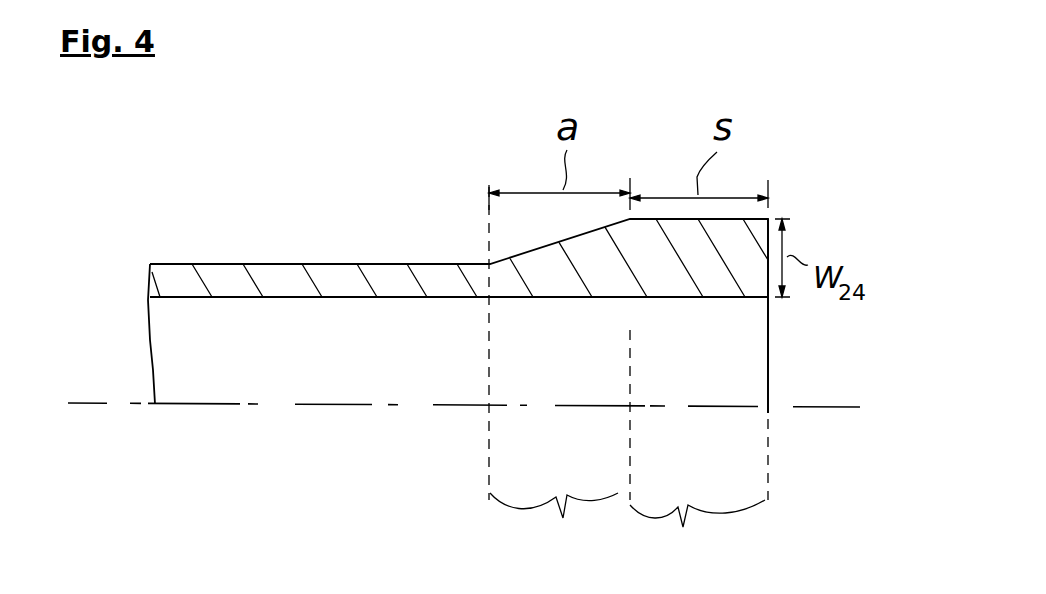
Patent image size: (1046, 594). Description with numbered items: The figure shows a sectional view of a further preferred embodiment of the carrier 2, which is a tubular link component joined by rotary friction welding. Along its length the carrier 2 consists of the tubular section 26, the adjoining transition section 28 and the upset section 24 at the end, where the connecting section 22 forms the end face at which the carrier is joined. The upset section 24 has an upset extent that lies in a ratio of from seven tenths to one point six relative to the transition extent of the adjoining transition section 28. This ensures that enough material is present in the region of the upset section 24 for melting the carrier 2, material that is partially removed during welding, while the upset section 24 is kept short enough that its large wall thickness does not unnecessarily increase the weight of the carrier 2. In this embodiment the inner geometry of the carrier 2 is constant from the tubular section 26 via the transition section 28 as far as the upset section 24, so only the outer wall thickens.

The carrier 2 is at (421, 226).
The connecting section 22 is at (770, 275).
The upset section 24 is at (678, 530).
The tubular section 26 is at (284, 272).
The transition section 28 is at (560, 530).